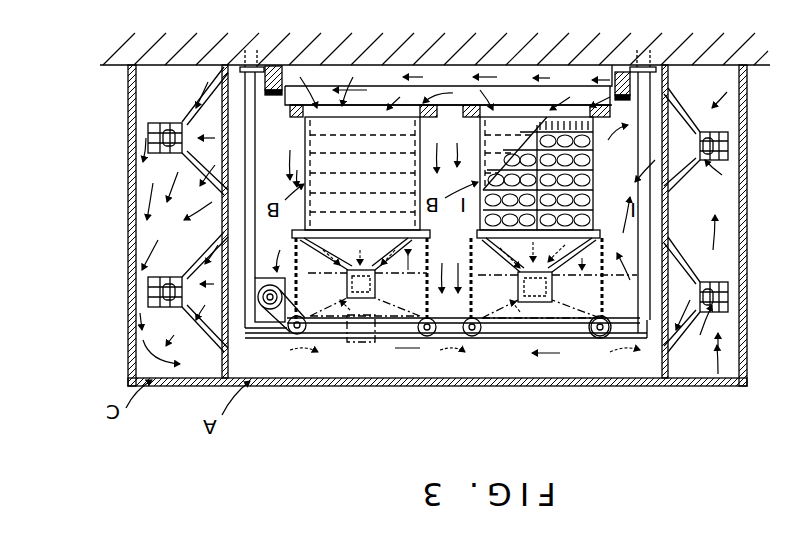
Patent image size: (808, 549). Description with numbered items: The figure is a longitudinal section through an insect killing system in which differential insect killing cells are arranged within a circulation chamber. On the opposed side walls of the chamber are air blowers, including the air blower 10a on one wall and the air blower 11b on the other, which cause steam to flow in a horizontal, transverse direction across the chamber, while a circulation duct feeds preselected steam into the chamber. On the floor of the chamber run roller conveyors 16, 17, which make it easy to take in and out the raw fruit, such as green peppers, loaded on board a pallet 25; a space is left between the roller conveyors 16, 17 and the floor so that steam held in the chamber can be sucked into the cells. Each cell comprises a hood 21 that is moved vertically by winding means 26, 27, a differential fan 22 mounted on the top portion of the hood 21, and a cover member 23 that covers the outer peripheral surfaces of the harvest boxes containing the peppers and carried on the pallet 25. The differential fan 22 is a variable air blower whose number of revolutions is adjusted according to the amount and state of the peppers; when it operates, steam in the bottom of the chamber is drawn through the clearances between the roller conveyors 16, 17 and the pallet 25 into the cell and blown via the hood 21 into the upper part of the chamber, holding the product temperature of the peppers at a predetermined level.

The roller conveyor 17 is at (273, 66).
The cover member 23 is at (322, 140).
The pallet 25 is at (470, 100).
The roller conveyor 16 is at (507, 97).
The air blower 11b is at (148, 136).
The air blower 10a is at (728, 138).
The winding means 26 is at (316, 342).
The winding means 27 is at (467, 342).
The differential fan 22 is at (337, 342).
The hood 21 is at (322, 342).